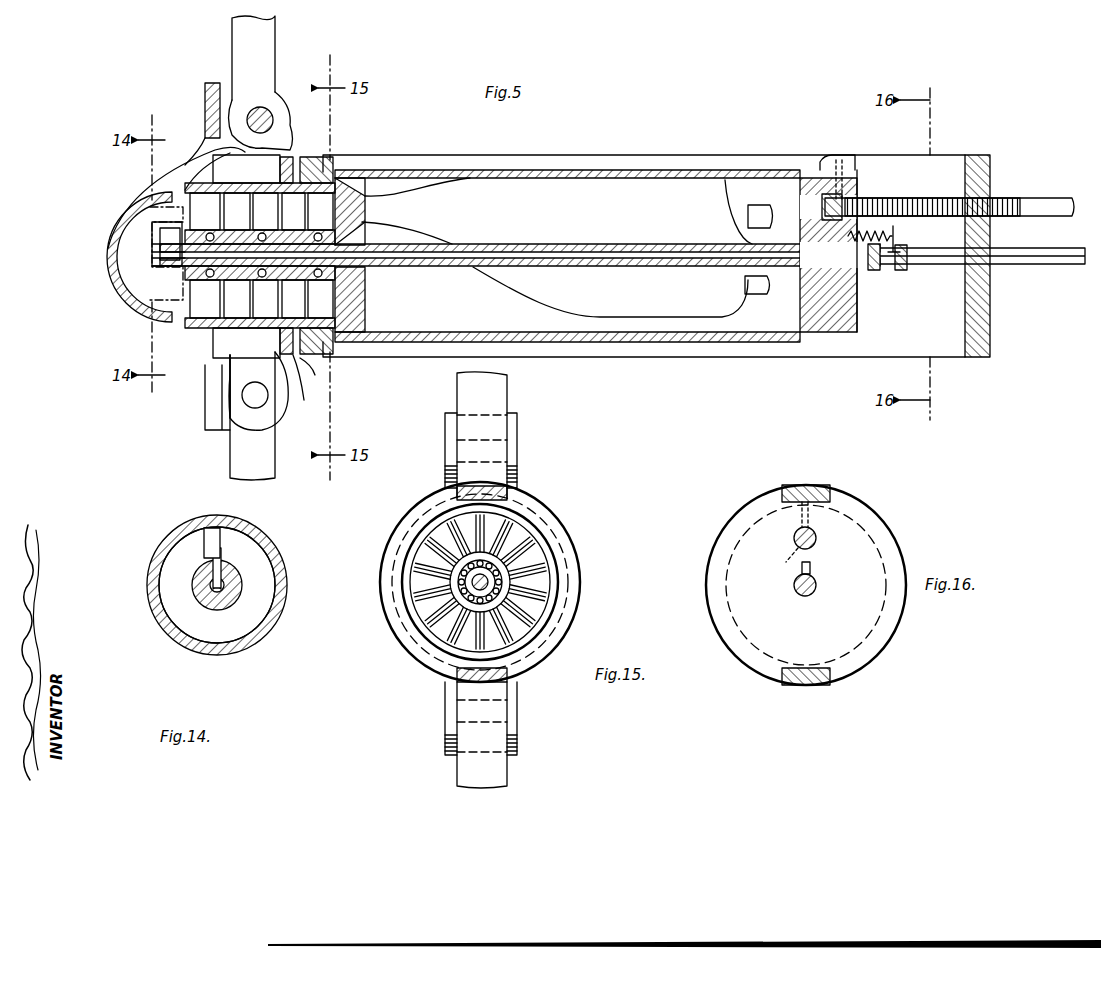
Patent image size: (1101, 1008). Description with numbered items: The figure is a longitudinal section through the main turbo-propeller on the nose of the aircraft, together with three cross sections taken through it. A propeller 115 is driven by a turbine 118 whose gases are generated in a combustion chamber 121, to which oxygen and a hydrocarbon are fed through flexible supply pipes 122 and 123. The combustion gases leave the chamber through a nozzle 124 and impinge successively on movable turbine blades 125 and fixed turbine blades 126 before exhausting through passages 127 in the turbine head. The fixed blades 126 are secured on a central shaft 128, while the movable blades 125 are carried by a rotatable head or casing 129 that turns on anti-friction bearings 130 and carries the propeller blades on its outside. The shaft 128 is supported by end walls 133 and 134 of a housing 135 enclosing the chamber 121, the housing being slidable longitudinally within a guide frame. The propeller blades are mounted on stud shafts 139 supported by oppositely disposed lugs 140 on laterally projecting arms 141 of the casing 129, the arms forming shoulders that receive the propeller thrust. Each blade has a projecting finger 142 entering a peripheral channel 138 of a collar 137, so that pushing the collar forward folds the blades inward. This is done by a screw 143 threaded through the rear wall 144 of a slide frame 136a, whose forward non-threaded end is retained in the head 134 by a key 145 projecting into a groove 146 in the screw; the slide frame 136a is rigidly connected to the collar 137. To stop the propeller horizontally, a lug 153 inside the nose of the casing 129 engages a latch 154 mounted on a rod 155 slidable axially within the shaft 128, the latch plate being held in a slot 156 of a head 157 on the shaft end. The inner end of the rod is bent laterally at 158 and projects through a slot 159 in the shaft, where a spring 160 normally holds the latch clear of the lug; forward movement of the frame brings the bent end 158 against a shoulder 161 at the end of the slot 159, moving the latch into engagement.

In FIG. 5, the propeller 115 is at (232, 46).
In FIG. 15, the propeller 115 is at (500, 393).
In FIG. 5, the turbine 118 is at (118, 278).
In FIG. 14, the turbine 118 is at (287, 584).
In FIG. 5, the combustion chamber 121 is at (548, 190).
In FIG. 5, the flexible supply pipe 122 is at (755, 205).
In FIG. 5, the flexible supply pipe 123 is at (756, 294).
In FIG. 5, the nozzle 124 is at (350, 192).
In FIG. 5, the movable turbine blades 125 is at (296, 211).
In FIG. 15, the movable turbine blades 125 is at (430, 550).
In FIG. 5, the fixed turbine blades 126 is at (251, 211).
In FIG. 5, the passages 127 is at (175, 168).
In FIG. 5, the central shaft 128 is at (450, 268).
In FIG. 15, the central shaft 128 is at (445, 640).
In FIG. 16, the central shaft 128 is at (816, 588).
In FIG. 5, the rotatable head or casing 129 is at (230, 328).
In FIG. 14, the rotatable head or casing 129 is at (270, 630).
In FIG. 15, the rotatable head or casing 129 is at (548, 622).
In FIG. 5, the anti-friction bearings 130 is at (210, 280).
In FIG. 15, the anti-friction bearings 130 is at (460, 590).
In FIG. 5, the end wall 133 is at (365, 322).
In FIG. 5, the end wall 134 is at (857, 325).
In FIG. 16, the end wall 134 is at (750, 550).
In FIG. 5, the housing 135 is at (642, 342).
In FIG. 16, the housing 135 is at (748, 512).
In FIG. 5, the slide frame 136a is at (690, 168).
In FIG. 15, the slide frame 136a is at (542, 493).
In FIG. 16, the slide frame 136a is at (812, 485).
In FIG. 5, the collar 137 is at (315, 375).
In FIG. 15, the collar 137 is at (580, 585).
In FIG. 5, the peripheral groove or channel 138 is at (306, 389).
In FIG. 15, the peripheral groove or channel 138 is at (550, 528).
In FIG. 5, the stud shafts 139 is at (258, 104).
In FIG. 15, the stud shafts 139 is at (515, 445).
In FIG. 5, the lugs 140 is at (286, 82).
In FIG. 15, the lugs 140 is at (507, 418).
In FIG. 5, the laterally projecting arms 141 is at (205, 108).
In FIG. 15, the laterally projecting arms 141 is at (475, 410).
In FIG. 5, the projecting finger 142 is at (292, 150).
In FIG. 15, the projecting finger 142 is at (505, 485).
In FIG. 5, the screw 143 is at (1014, 200).
In FIG. 16, the screw 143 is at (816, 538).
In FIG. 5, the rear wall 144 is at (990, 318).
In FIG. 5, the key 145 is at (838, 172).
In FIG. 16, the key 145 is at (782, 525).
In FIG. 5, the groove 146 is at (848, 200).
In FIG. 16, the groove 146 is at (781, 563).
In FIG. 5, the lug 153 is at (152, 228).
In FIG. 14, the lug 153 is at (204, 540).
In FIG. 5, the latch 154 is at (160, 242).
In FIG. 14, the latch 154 is at (222, 560).
In FIG. 5, the rod 155 is at (585, 246).
In FIG. 14, the rod 155 is at (205, 605).
In FIG. 15, the rod 155 is at (538, 560).
In FIG. 5, the slot 156 is at (242, 240).
In FIG. 5, the head 157 is at (160, 268).
In FIG. 14, the head 157 is at (234, 598).
In FIG. 5, the laterally bent end 158 is at (895, 236).
In FIG. 16, the laterally bent end 158 is at (812, 568).
In FIG. 5, the slot 159 is at (874, 270).
In FIG. 5, the spring 160 is at (905, 210).
In FIG. 5, the shoulder 161 is at (902, 270).